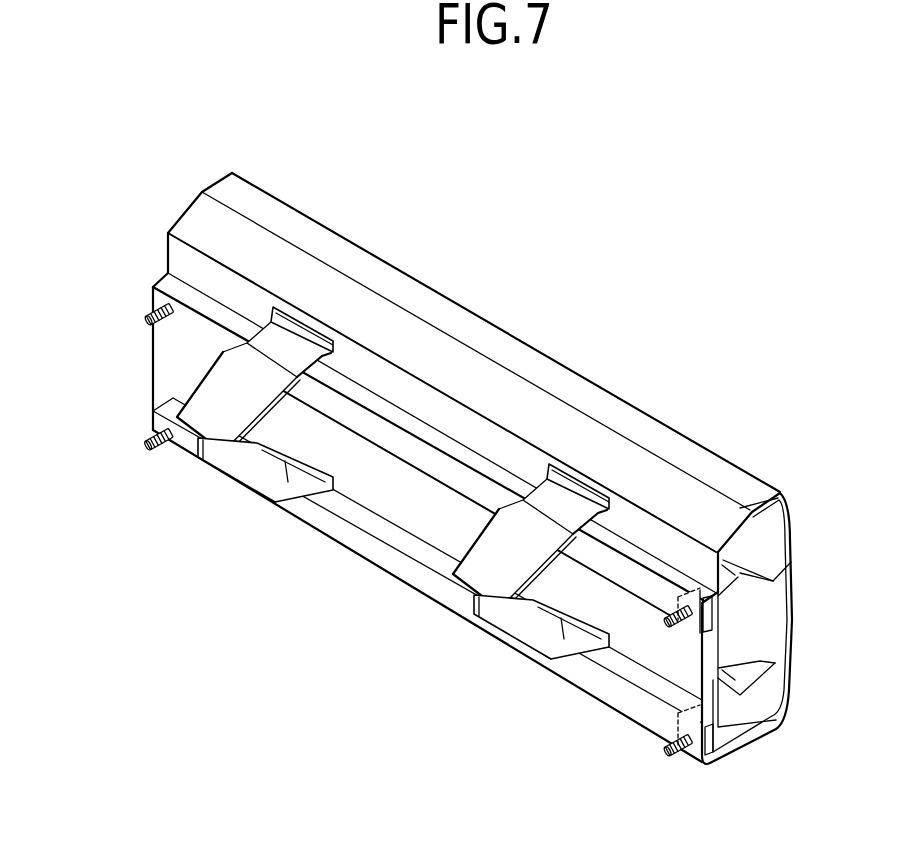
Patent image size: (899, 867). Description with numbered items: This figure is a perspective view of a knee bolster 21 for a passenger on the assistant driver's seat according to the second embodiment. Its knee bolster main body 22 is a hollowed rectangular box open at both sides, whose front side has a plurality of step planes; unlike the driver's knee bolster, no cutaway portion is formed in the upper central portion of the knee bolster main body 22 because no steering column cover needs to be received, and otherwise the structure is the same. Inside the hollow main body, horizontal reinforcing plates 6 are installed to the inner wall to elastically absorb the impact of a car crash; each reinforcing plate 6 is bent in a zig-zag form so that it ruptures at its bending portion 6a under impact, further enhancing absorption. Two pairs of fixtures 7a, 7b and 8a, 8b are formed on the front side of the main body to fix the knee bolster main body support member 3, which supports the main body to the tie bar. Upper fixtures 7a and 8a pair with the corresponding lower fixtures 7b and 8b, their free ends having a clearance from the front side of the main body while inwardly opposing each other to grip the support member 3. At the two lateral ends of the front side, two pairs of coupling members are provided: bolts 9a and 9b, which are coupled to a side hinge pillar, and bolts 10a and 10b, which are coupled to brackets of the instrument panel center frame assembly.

The knee bolster 21 is at (761, 432).
The knee bolster main body 22 is at (414, 511).
The knee bolster main body support member 3 is at (218, 388).
The reinforcing plate 6 is at (767, 559).
The bending portion 6a is at (789, 582).
The upper fixture 7a is at (590, 470).
The lower fixture 7b is at (604, 643).
The upper fixture 8a is at (297, 318).
The lower fixture 8b is at (312, 490).
The bolt 9a is at (672, 611).
The bolt 9b is at (665, 748).
The bolt 10a is at (146, 322).
The bolt 10b is at (147, 447).